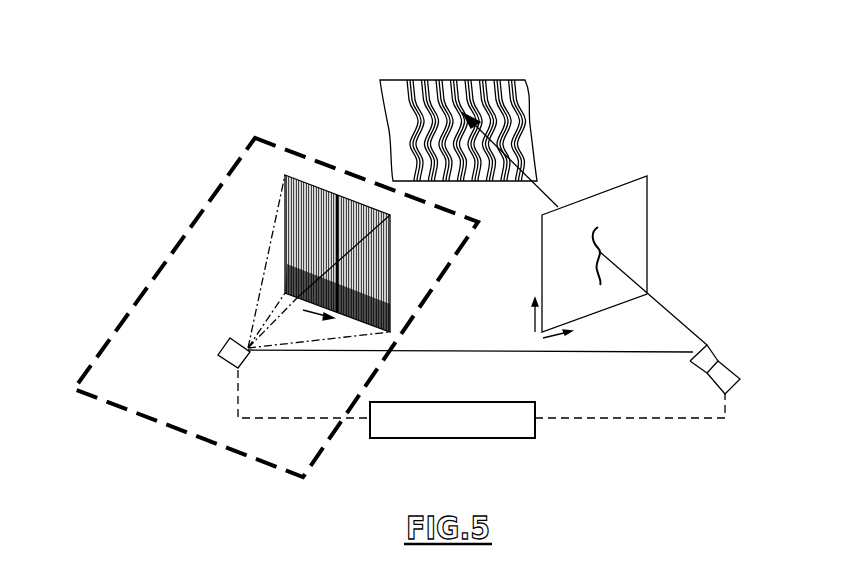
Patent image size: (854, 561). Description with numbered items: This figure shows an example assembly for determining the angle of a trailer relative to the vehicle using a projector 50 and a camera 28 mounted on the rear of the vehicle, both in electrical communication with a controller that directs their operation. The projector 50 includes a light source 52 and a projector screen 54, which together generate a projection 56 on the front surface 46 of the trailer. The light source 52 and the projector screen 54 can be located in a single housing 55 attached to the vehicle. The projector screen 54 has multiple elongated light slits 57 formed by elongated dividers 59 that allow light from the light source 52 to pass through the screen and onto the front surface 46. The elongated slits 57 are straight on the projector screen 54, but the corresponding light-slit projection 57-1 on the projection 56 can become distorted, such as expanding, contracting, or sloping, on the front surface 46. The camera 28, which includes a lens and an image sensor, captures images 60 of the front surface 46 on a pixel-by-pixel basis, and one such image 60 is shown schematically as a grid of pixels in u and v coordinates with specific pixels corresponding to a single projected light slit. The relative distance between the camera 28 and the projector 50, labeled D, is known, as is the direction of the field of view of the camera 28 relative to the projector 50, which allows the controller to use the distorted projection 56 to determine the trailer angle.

The projector 50 is at (104, 180).
The housing 55 is at (146, 288).
The light source 52 is at (226, 344).
The projector screen 54 is at (287, 198).
The elongated dividers 59 is at (333, 186).
The elongated light slits 57 is at (310, 192).
The front surface 46 is at (540, 110).
The projection 56 is at (520, 55).
The light-slit projection 57-1 is at (456, 88).
The image 60 is at (664, 155).
The camera 28 is at (736, 370).